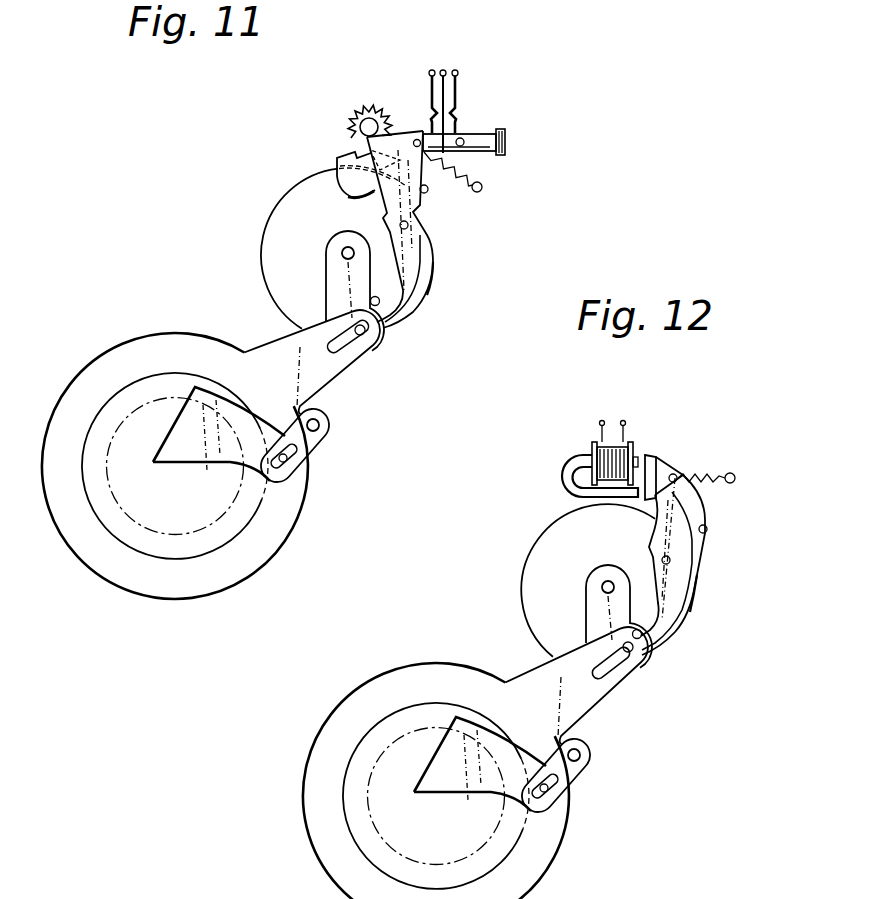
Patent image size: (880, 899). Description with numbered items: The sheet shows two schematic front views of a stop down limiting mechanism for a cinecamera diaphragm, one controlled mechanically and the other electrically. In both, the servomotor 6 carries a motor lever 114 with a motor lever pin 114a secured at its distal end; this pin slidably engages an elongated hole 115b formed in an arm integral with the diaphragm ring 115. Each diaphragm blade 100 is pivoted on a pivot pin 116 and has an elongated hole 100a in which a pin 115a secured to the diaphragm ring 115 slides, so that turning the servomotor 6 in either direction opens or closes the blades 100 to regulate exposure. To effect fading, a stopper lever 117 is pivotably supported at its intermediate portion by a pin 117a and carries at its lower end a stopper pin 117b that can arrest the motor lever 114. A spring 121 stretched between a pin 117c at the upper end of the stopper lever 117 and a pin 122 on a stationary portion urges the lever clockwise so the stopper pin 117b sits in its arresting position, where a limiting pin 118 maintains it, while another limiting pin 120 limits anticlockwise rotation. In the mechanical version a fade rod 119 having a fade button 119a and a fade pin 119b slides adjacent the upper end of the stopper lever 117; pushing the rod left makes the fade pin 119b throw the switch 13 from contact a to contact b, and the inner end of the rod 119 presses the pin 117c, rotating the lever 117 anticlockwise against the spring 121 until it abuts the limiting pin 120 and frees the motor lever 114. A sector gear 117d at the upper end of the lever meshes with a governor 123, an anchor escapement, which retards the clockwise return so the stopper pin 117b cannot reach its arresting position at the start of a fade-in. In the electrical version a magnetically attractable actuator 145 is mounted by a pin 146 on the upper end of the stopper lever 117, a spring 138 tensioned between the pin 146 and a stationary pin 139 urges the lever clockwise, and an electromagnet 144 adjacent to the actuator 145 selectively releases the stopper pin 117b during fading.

In FIG. 11, the servomotor 6 is at (290, 213).
In FIG. 12, the servomotor 6 is at (543, 558).
In FIG. 11, the switch 13 is at (443, 70).
In FIG. 11, the contact a is at (457, 71).
In FIG. 11, the contact b is at (430, 71).
In FIG. 11, the diaphragm blade 100 is at (212, 458).
In FIG. 12, the diaphragm blade 100 is at (444, 796).
In FIG. 11, the elongated hole 100a is at (302, 512).
In FIG. 12, the elongated hole 100a is at (463, 781).
In FIG. 11, the motor lever 114 is at (338, 270).
In FIG. 12, the motor lever 114 is at (597, 600).
In FIG. 11, the motor lever pin 114a is at (366, 336).
In FIG. 12, the motor lever pin 114a is at (633, 667).
In FIG. 11, the diaphragm ring 115 is at (340, 377).
In FIG. 12, the diaphragm ring 115 is at (593, 693).
In FIG. 11, the pin 115a is at (292, 466).
In FIG. 12, the pin 115a is at (578, 795).
In FIG. 11, the elongated hole 115b is at (345, 356).
In FIG. 12, the elongated hole 115b is at (607, 687).
In FIG. 11, the pivot pin 116 is at (325, 430).
In FIG. 12, the pivot pin 116 is at (576, 775).
In FIG. 11, the stopper lever 117 is at (430, 264).
In FIG. 12, the stopper lever 117 is at (691, 597).
In FIG. 11, the pin 117a is at (409, 228).
In FIG. 12, the pin 117a is at (671, 560).
In FIG. 11, the stopper pin 117b is at (380, 304).
In FIG. 12, the stopper pin 117b is at (642, 637).
In FIG. 11, the pin 117c is at (414, 130).
In FIG. 11, the sector gear 117d is at (398, 130).
In FIG. 11, the limiting pin 118 is at (428, 192).
In FIG. 12, the limiting pin 118 is at (708, 529).
In FIG. 11, the fade rod 119 is at (497, 135).
In FIG. 11, the fade button 119a is at (506, 150).
In FIG. 11, the fade pin 119b is at (462, 138).
In FIG. 11, the limiting pin 120 is at (431, 288).
In FIG. 12, the limiting pin 120 is at (696, 606).
In FIG. 11, the spring 121 is at (457, 164).
In FIG. 11, the pin 122 is at (482, 190).
In FIG. 11, the governor 123 is at (346, 142).
In FIG. 12, the spring 138 is at (705, 474).
In FIG. 12, the stationary pin 139 is at (732, 473).
In FIG. 12, the electromagnet 144 is at (593, 457).
In FIG. 12, the actuator 145 is at (651, 455).
In FIG. 12, the pin 146 is at (674, 473).